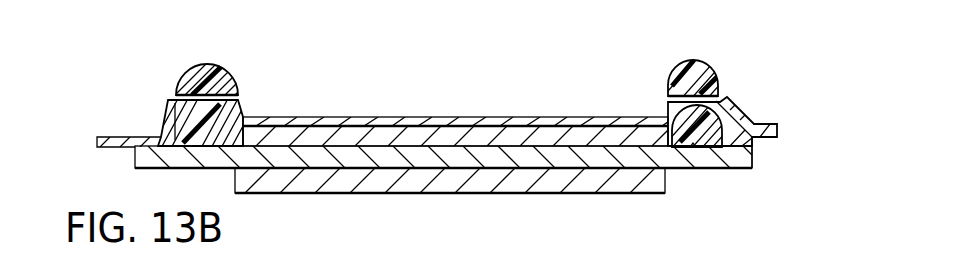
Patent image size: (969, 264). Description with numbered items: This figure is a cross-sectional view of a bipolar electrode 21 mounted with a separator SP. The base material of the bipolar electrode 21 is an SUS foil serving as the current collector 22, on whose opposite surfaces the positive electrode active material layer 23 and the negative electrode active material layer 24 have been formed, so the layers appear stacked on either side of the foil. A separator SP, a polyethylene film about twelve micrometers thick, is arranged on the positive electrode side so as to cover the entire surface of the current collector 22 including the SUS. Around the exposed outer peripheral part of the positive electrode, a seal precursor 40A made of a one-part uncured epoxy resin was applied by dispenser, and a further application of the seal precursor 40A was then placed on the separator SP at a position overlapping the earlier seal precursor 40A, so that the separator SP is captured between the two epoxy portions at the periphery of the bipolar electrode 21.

The seal precursor 40A is at (233, 143).
The separator SP is at (308, 117).
The current collector 22 is at (363, 152).
The positive electrode active material layer 23 is at (423, 133).
The negative electrode active material layer 24 is at (488, 182).
The bipolar electrode 21 is at (772, 157).